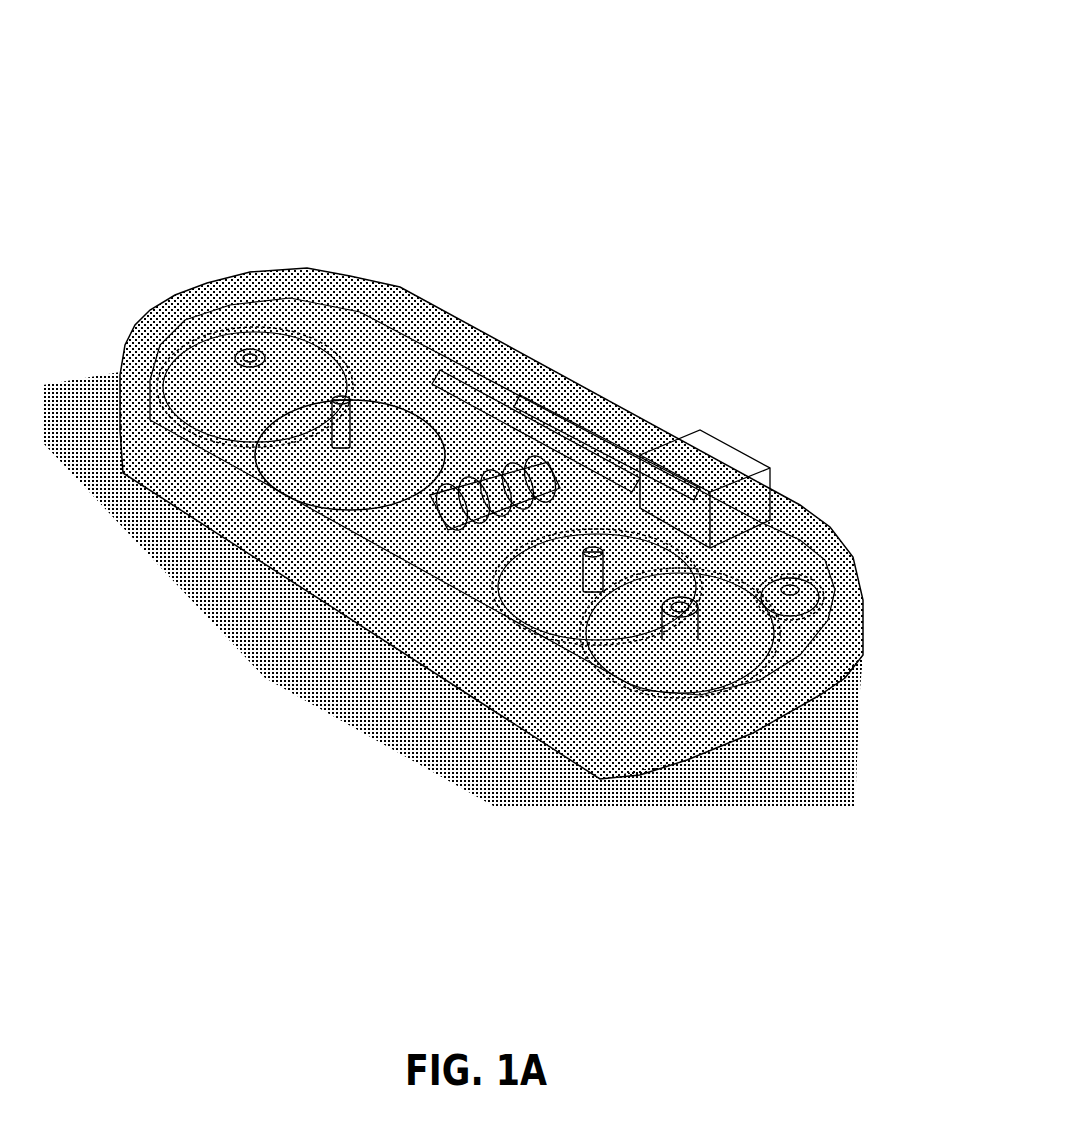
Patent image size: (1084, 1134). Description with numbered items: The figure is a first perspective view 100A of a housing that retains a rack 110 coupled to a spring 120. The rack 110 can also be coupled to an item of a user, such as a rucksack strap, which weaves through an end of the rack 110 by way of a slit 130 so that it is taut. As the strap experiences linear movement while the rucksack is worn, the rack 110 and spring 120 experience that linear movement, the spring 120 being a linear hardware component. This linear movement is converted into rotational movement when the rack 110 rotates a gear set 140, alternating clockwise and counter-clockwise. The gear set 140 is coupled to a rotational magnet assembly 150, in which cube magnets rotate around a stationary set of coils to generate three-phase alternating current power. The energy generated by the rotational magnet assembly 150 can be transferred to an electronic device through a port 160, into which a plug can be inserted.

The first perspective view 100A is at (494, 50).
The rack 110 is at (525, 405).
The spring 120 is at (482, 490).
The slit 130 is at (585, 420).
The gear set 140 is at (665, 663).
The rotational magnet assembly 150 is at (793, 580).
The port 160 is at (714, 495).